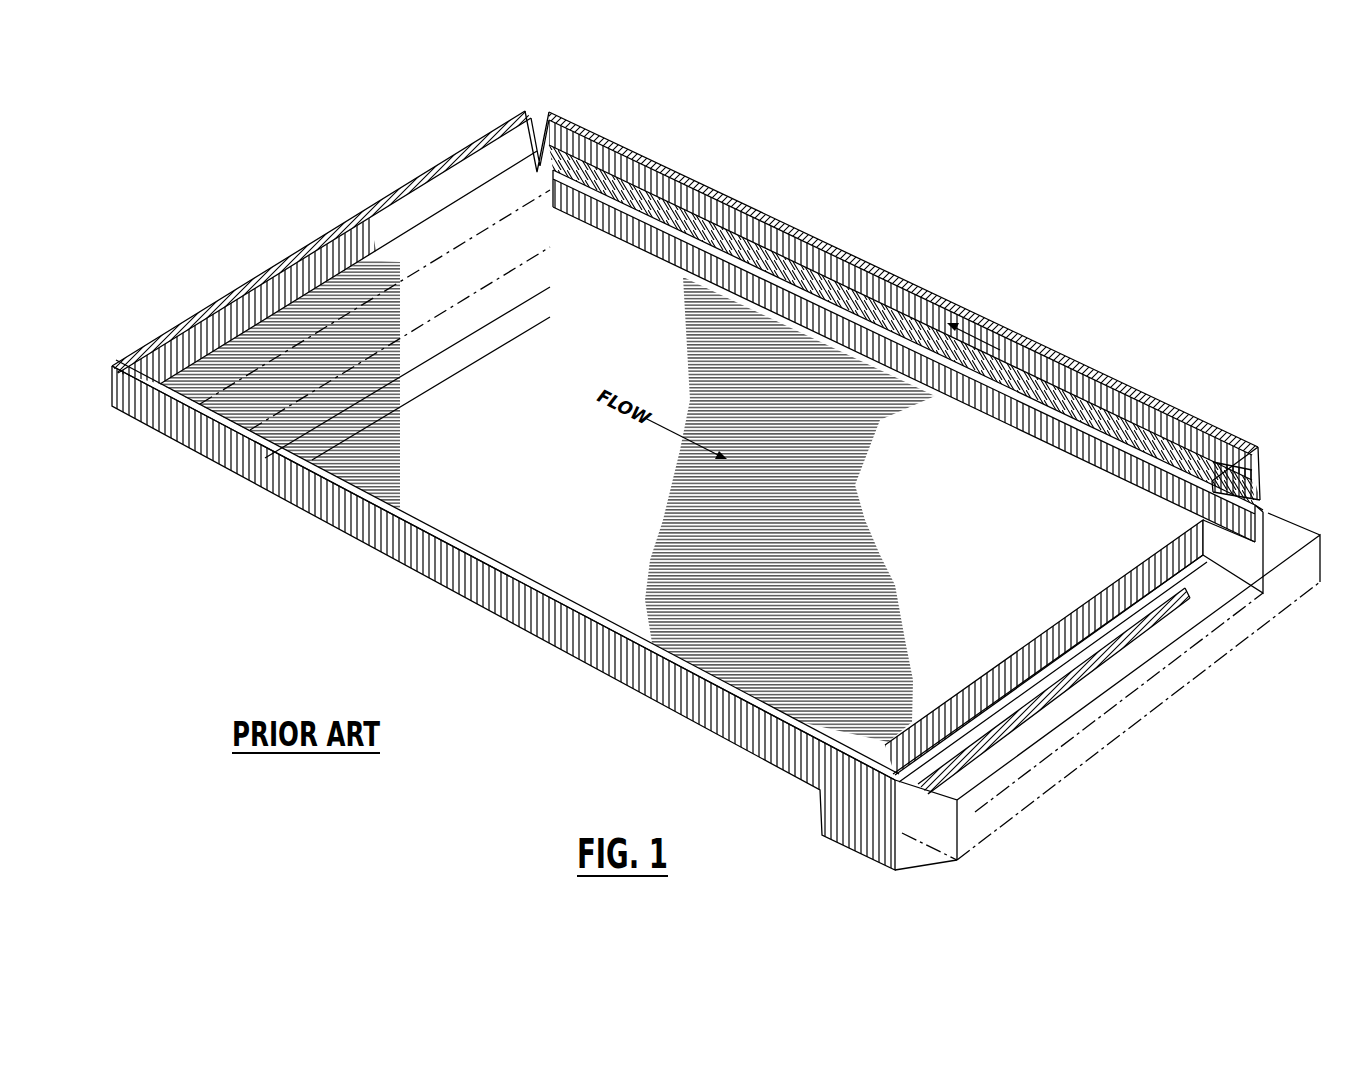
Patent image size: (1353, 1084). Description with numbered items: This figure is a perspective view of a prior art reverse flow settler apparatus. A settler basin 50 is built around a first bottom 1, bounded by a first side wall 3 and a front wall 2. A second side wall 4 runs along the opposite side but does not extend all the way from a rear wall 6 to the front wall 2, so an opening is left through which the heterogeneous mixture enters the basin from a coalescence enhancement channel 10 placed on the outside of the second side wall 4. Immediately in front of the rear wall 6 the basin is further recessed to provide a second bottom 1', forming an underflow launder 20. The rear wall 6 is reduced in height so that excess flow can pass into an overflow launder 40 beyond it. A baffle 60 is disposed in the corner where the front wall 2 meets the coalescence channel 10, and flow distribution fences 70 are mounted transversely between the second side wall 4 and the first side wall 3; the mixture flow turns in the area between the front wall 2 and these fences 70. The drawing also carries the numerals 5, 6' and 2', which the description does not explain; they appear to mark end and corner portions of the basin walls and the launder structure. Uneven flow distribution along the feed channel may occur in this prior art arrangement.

The first bottom 1 is at (505, 570).
The front wall 2 is at (324, 247).
The first side wall 3 is at (307, 492).
The second side wall 4 is at (1108, 458).
The end wall 5 is at (1147, 417).
The rear wall 6 is at (1244, 549).
The inlet corner 6' is at (1254, 479).
The coalescence enhancement channel 10 is at (835, 275).
The underflow launder 20 is at (1061, 645).
The overflow launder 40 is at (1190, 662).
The settler basin 50 is at (353, 552).
The baffle 60 is at (528, 150).
The flow distribution fences 70 is at (528, 293).
The second bottom 1' is at (1074, 651).
The channel end wall 2' is at (1054, 670).